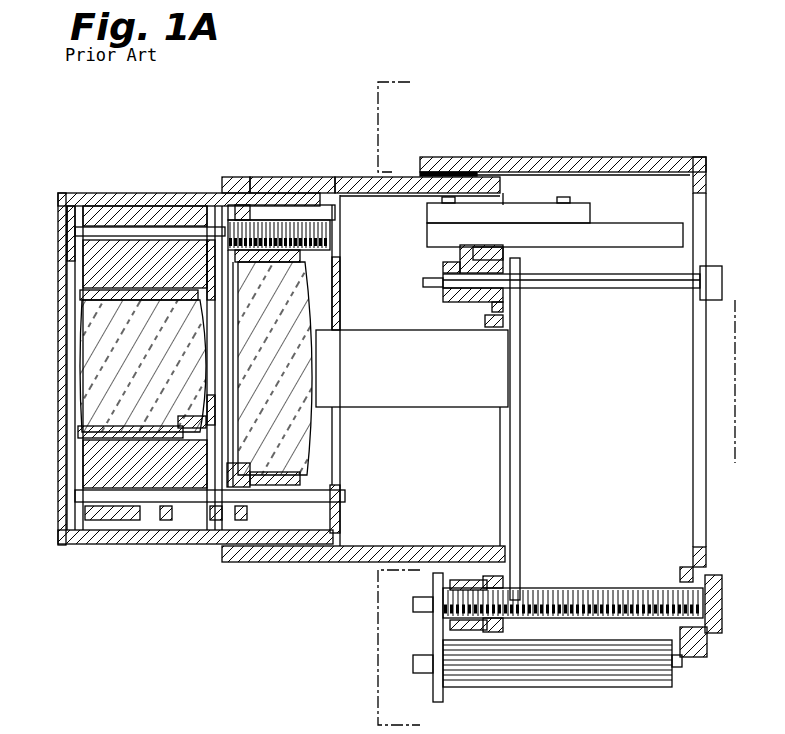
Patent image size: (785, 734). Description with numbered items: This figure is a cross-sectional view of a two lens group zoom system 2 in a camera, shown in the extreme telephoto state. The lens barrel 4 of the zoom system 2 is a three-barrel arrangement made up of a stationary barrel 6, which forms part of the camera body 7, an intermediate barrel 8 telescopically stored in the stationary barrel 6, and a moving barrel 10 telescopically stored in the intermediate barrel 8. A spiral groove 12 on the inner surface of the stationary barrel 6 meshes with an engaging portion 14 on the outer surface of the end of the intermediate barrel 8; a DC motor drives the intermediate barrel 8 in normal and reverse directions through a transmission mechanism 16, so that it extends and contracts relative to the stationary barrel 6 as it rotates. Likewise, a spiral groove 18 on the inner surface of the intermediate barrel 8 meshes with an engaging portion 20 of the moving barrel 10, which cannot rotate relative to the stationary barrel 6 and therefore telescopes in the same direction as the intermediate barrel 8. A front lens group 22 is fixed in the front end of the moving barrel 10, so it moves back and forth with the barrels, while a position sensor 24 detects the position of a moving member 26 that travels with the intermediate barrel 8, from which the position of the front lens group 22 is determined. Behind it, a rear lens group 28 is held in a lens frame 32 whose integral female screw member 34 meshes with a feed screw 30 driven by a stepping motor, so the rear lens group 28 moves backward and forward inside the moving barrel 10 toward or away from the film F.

The zoom system 2 is at (86, 126).
The lens barrel 4 is at (297, 566).
The stationary barrel 6 is at (618, 158).
The camera body 7 is at (365, 93).
The intermediate barrel 8 is at (400, 178).
The moving barrel 10 is at (108, 192).
The spiral groove 12 is at (547, 170).
The engaging portion 14 is at (457, 170).
The transmission mechanism 16 is at (607, 596).
The spiral groove 18 is at (377, 193).
The engaging portion 20 is at (302, 185).
The front lens group 22 is at (100, 362).
The position sensor 24 is at (628, 232).
The moving member 26 is at (522, 298).
The rear lens group 28 is at (303, 440).
The feed screw 30 is at (256, 212).
The lens frame 32 is at (300, 262).
The female screw member 34 is at (222, 200).
The film F is at (736, 380).